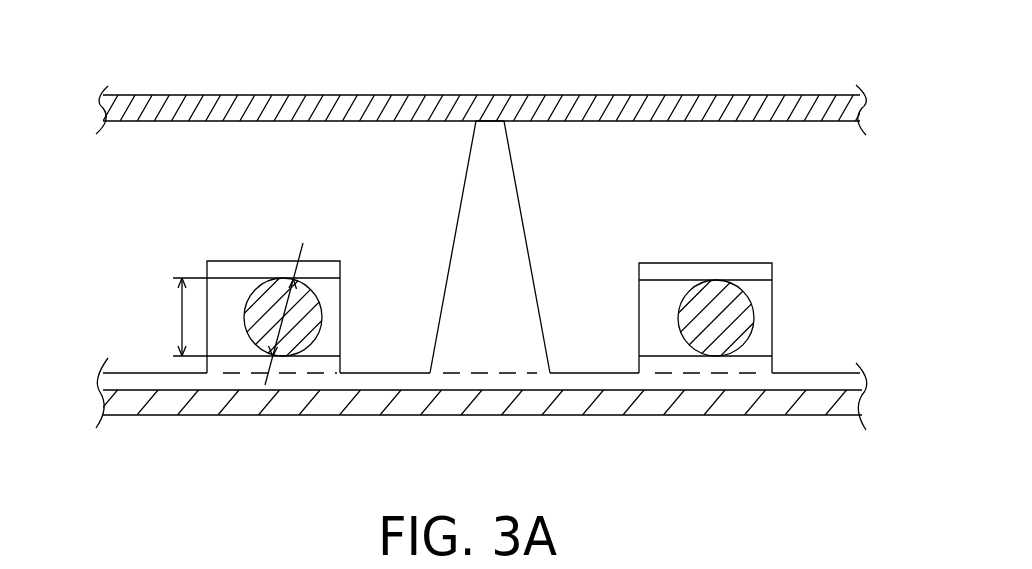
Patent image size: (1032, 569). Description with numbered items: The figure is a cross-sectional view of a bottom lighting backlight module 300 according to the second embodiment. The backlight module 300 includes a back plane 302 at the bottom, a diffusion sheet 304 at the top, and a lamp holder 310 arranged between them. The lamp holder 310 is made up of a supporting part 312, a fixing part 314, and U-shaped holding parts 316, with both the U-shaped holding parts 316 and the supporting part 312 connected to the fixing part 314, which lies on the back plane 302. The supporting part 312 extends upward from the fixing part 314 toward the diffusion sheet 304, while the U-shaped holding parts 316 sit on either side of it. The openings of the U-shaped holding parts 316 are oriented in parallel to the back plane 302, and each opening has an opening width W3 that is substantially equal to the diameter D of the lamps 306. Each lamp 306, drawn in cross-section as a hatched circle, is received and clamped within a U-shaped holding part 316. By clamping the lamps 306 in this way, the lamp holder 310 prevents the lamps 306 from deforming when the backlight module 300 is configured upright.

The bottom lighting backlight module 300 is at (157, 43).
The back plane 302 is at (759, 416).
The diffusion sheet 304 is at (721, 95).
The lamp 306 is at (753, 312).
The lamp holder 310 is at (145, 228).
The supporting part 312 is at (527, 245).
The fixing part 314 is at (807, 373).
The U-shaped holding part 316 is at (740, 263).
The diameter of the lamps D is at (289, 295).
The opening width W3 is at (187, 317).